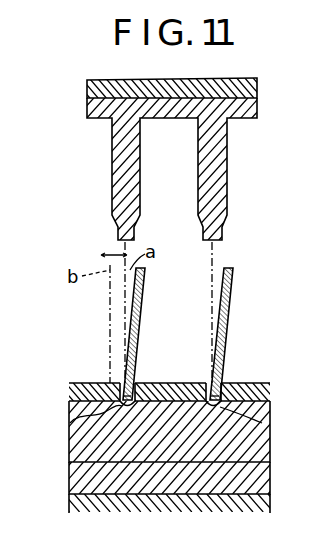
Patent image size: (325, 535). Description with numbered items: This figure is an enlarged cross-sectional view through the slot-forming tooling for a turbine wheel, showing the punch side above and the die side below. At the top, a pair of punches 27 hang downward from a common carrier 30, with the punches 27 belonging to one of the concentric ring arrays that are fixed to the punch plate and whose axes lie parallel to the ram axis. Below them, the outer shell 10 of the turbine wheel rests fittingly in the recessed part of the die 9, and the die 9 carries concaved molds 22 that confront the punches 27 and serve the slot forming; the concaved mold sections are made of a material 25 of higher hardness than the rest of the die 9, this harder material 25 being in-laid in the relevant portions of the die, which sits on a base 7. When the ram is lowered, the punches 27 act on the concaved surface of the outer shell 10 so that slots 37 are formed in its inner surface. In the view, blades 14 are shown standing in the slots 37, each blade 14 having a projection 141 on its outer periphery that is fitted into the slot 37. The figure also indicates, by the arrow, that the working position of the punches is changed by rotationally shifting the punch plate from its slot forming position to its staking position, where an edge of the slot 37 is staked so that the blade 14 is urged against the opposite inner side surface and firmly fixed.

The base plate 30 is at (258, 89).
The punch array 27 is at (116, 161).
The blade 14 is at (182, 309).
The projection 141 is at (136, 383).
The slots 37 is at (117, 383).
The outer shell 10 is at (248, 383).
The concaved molds 22 is at (69, 421).
The material of higher hardness 25 is at (254, 447).
The die 9 is at (256, 481).
The substrate 7 is at (253, 505).